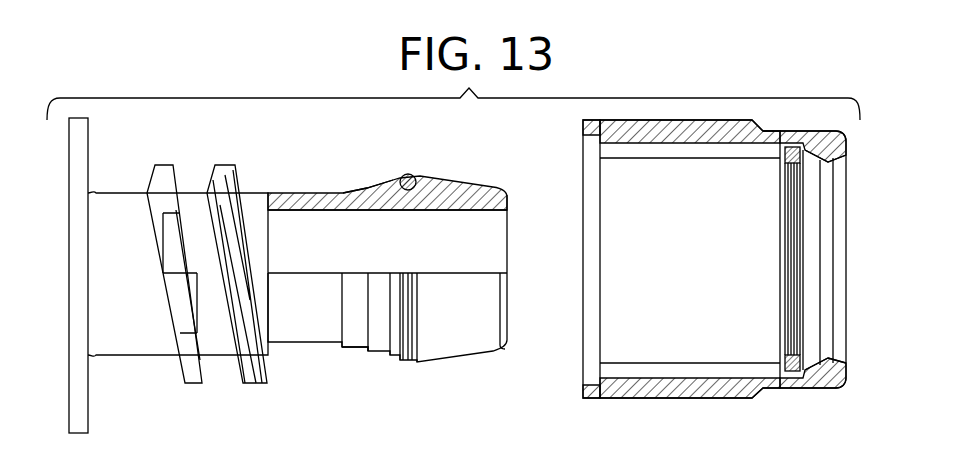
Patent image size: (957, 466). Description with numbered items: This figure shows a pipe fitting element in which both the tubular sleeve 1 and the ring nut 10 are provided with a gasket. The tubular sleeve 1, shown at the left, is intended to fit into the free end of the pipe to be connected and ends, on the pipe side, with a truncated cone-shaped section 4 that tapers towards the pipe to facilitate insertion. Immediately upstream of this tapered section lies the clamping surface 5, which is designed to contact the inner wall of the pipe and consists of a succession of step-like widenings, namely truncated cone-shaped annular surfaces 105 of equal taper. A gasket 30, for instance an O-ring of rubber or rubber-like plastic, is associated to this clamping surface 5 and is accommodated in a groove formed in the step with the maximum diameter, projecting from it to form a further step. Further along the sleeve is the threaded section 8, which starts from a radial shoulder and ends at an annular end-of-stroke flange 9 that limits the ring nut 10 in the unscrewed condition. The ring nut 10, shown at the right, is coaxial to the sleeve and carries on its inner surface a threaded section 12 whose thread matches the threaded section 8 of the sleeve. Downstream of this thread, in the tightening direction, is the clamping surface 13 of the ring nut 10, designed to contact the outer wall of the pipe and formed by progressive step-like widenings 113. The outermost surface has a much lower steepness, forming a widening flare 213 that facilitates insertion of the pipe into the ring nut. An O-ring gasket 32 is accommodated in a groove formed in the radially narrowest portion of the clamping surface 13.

The tubular sleeve 1 is at (310, 348).
The truncated cone-shaped section 4 is at (457, 184).
The clamping surface 5 is at (355, 350).
The threaded section 8 is at (177, 370).
The annular end-of-stroke flange 9 is at (89, 411).
The ring nut 10 is at (680, 401).
The threaded section 12 is at (653, 370).
The clamping surface 13 is at (829, 164).
The gasket 30 is at (409, 173).
The O-ring gasket 32 is at (792, 246).
The truncated cone-shaped annular surfaces 105 is at (351, 188).
The step-like widenings 113 is at (816, 352).
The widening flare 213 is at (846, 360).